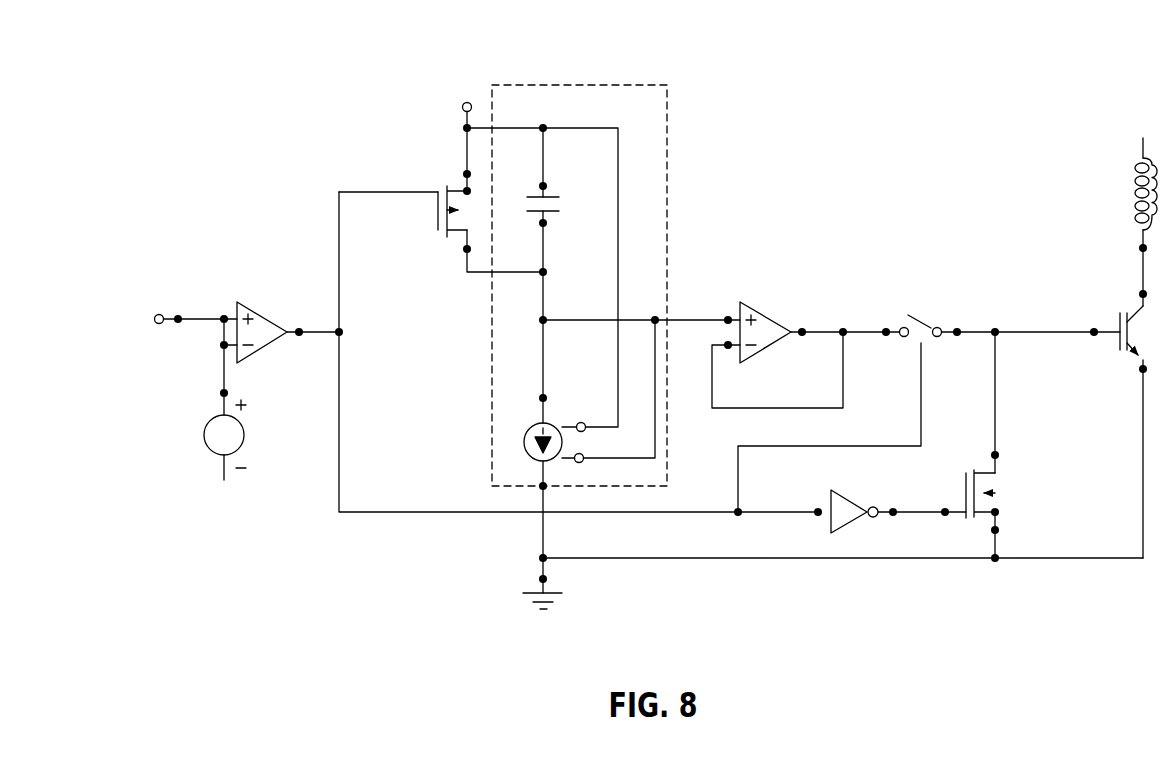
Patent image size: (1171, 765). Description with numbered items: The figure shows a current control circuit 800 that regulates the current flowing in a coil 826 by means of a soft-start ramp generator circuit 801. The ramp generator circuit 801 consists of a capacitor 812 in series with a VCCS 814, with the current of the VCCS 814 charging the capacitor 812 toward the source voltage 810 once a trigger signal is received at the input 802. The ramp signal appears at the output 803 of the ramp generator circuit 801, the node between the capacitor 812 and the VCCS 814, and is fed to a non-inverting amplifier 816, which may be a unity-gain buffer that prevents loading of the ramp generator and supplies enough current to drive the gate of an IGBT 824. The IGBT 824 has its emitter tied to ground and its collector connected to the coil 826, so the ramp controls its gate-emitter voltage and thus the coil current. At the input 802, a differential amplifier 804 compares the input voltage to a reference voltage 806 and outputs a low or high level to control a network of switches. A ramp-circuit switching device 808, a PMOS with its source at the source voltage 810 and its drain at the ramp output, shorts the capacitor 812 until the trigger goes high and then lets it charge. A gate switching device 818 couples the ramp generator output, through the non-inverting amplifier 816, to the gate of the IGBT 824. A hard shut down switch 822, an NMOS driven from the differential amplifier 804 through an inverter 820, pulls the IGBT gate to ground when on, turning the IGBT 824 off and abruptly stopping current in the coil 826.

The current control circuit 800 is at (236, 71).
The soft-start ramp generator circuit 801 is at (682, 146).
The input 802 is at (153, 306).
The output of the ramp generator circuit 803 is at (692, 314).
The differential amplifier 804 is at (236, 298).
The reference voltage 806 is at (206, 417).
The ramp-circuit switching device 808 is at (428, 181).
The source voltage 810 is at (460, 98).
The capacitor 812 is at (554, 188).
The VCCS 814 is at (525, 417).
The non-inverting amplifier 816 is at (739, 289).
The gate switching device 818 is at (910, 299).
The inverter 820 is at (814, 493).
The hard shut down switch 822 is at (948, 490).
The IGBT 824 is at (1103, 316).
The coil 826 is at (1125, 180).